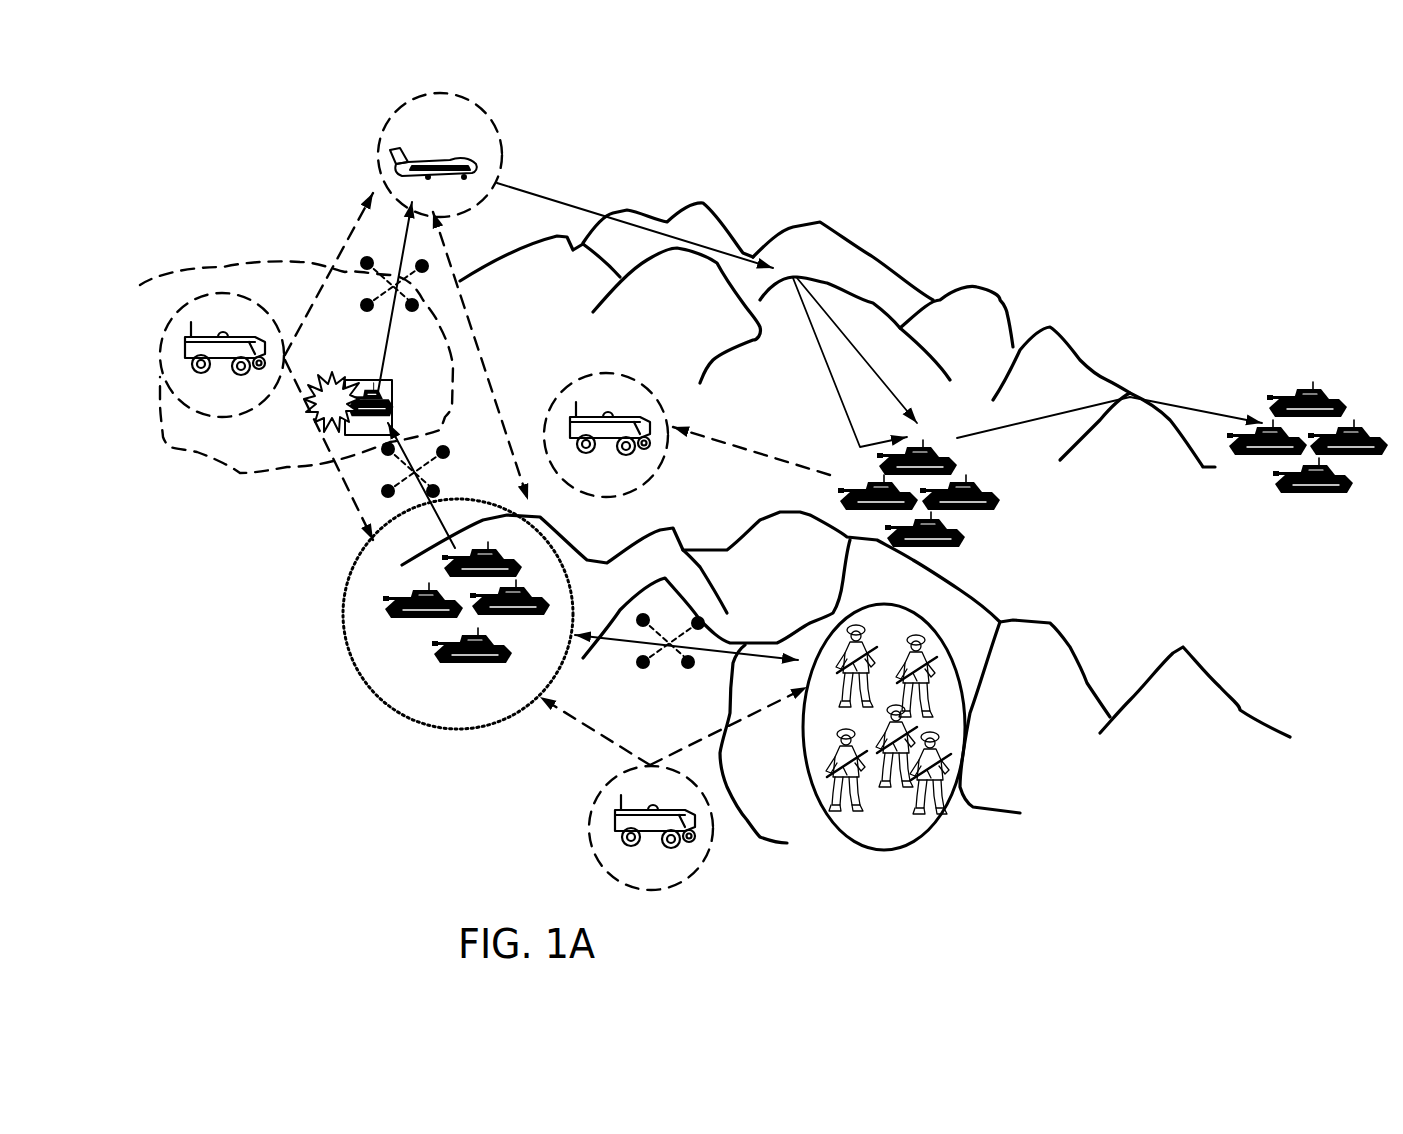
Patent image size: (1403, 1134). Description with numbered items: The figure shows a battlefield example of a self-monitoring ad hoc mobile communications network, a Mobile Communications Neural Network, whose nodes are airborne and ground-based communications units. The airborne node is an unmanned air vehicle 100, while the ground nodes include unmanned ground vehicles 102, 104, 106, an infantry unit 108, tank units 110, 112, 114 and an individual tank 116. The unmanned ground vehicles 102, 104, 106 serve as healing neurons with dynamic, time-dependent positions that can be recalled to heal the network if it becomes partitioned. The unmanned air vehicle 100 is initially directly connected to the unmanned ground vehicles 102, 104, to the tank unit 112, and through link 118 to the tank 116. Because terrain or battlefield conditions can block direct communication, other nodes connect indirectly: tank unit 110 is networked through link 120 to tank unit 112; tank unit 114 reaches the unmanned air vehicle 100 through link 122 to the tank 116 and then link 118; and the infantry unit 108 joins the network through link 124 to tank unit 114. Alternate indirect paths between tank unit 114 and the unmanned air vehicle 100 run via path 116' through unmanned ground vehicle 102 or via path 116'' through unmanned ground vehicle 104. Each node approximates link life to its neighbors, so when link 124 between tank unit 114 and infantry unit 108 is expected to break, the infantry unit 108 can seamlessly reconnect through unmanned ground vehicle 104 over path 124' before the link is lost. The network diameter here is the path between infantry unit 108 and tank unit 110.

The unmanned air vehicle 100 is at (401, 104).
The unmanned ground vehicle 102 is at (612, 373).
The unmanned ground vehicle 104 is at (225, 293).
The unmanned ground vehicle 106 is at (590, 822).
The infantry unit 108 is at (962, 790).
The tank unit 110 is at (1288, 506).
The tank unit 112 is at (1008, 542).
The tank unit 114 is at (345, 652).
The tank 116 is at (435, 406).
The indirect path 116' is at (509, 356).
The indirect path 116'' is at (299, 450).
The link 118 is at (386, 353).
The link 120 is at (1073, 400).
The link 122 is at (440, 517).
The link 124 is at (694, 627).
The path 124' is at (687, 749).